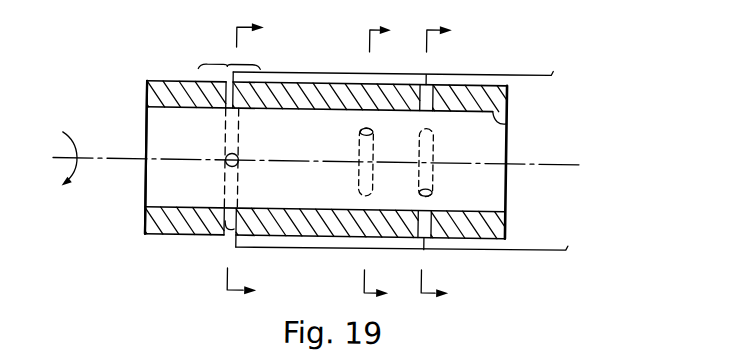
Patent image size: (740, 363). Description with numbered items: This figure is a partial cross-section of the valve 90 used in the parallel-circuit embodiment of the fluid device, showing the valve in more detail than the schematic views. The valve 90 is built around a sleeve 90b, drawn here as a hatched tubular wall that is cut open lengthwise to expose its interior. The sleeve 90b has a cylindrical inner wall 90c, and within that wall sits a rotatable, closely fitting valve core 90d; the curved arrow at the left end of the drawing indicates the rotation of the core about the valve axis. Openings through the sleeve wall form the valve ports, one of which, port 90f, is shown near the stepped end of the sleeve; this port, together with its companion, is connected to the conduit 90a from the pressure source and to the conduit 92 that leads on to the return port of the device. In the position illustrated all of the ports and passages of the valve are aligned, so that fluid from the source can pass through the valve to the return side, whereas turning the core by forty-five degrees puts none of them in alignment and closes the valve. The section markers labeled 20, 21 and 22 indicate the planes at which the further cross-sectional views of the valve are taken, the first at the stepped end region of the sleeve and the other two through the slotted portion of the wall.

The valve 90 is at (566, 89).
The conduit 90a is at (232, 240).
The sleeve 90b is at (463, 89).
The cylindrical inner wall 90c is at (226, 235).
The valve core 90d is at (146, 197).
The port 90f is at (230, 82).
The conduit 92 is at (226, 64).
The section line 20- 20 is at (259, 162).
The section line 21- 21 is at (391, 165).
The section line 22- 22 is at (451, 166).